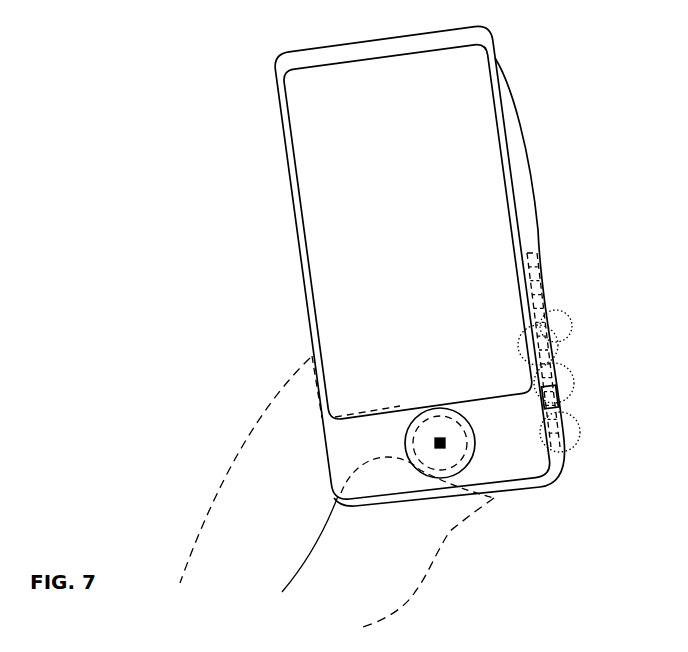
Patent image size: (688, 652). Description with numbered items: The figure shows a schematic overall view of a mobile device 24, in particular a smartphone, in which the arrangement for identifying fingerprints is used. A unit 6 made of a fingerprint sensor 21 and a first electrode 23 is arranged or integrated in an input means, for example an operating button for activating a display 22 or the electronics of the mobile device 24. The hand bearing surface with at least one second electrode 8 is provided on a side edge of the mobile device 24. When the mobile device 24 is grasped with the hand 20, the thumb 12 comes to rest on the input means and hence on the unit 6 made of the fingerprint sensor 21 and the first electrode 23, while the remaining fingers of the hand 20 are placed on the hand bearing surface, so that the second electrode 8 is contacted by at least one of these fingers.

The mobile device 24 is at (233, 111).
The display 22 is at (478, 90).
The second electrode 8 is at (543, 343).
The unit 6 is at (490, 488).
The fingerprint sensor 21 is at (470, 464).
The thumb 12 is at (436, 467).
The first electrode 23 is at (444, 452).
The hand 20 is at (216, 466).